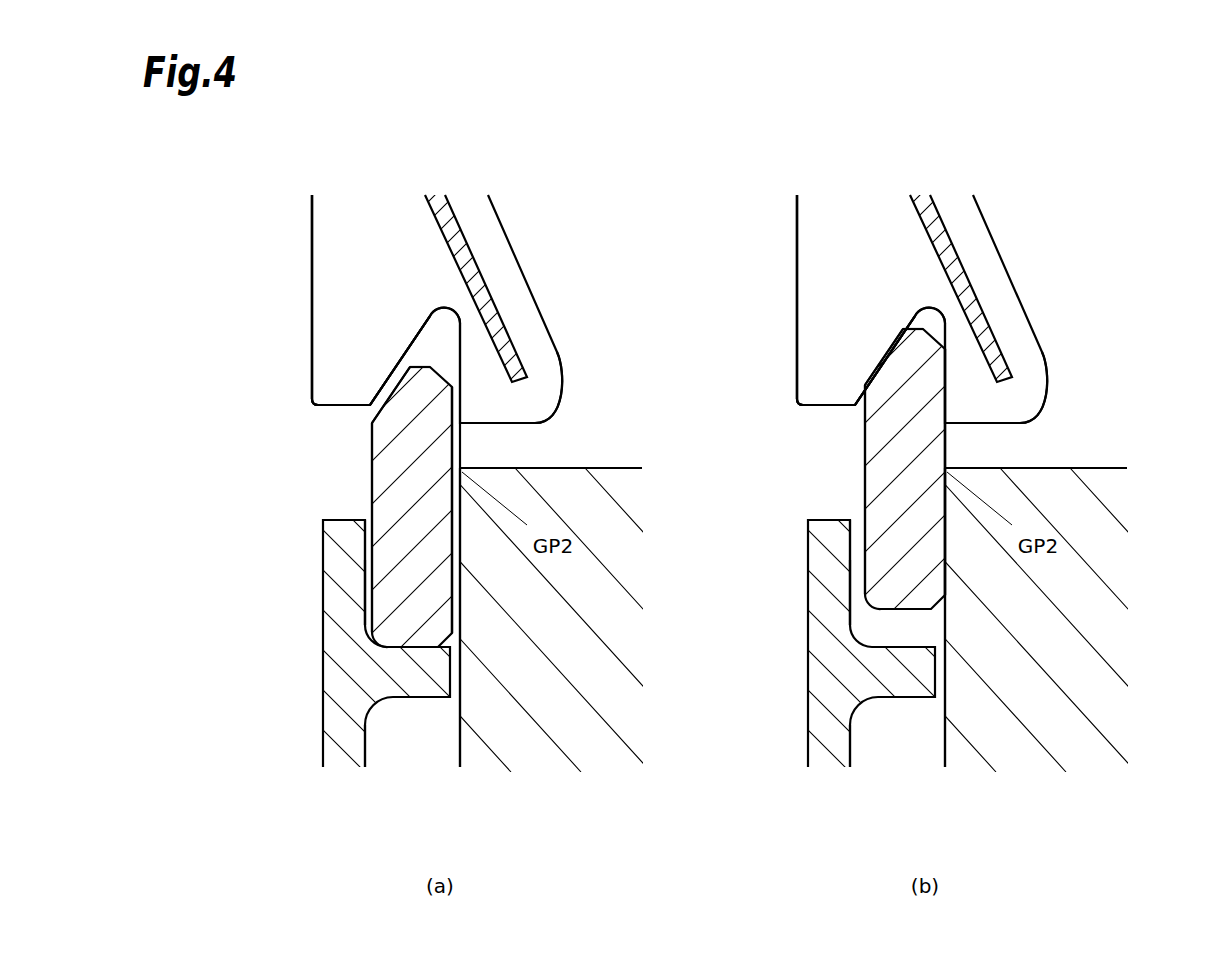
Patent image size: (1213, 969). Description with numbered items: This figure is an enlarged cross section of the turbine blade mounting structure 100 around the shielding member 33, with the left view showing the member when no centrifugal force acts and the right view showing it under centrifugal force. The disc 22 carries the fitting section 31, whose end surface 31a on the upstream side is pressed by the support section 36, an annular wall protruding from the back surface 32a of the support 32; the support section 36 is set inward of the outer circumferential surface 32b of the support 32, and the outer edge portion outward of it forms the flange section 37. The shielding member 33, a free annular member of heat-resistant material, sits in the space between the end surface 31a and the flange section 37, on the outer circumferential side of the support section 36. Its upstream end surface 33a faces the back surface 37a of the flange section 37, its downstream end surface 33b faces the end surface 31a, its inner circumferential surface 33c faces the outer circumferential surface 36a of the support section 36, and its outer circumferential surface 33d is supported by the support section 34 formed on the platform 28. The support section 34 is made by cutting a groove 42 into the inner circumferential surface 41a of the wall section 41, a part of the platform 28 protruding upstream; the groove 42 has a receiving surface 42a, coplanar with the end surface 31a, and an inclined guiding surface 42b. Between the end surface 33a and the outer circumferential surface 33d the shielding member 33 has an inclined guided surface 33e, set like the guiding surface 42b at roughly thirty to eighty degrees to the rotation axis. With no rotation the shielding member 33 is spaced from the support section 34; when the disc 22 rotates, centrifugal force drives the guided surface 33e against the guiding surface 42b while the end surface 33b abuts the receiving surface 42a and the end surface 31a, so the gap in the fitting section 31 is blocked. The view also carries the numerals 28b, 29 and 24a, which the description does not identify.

The turbine blade mounting structure 100 is at (277, 241).
The platform 28 is at (335, 287).
The bottom wall portion of housing member 28b is at (525, 430).
The inclined plate 29 is at (473, 281).
The support section 34 is at (250, 305).
The wall section 41 is at (340, 347).
The inner circumferential surface 41a is at (355, 411).
The groove 42 is at (358, 430).
The receiving surface 42a is at (454, 354).
The guiding surface 42b is at (408, 346).
The end face 24a is at (605, 465).
The disc 22 is at (456, 740).
The fitting section 31 is at (540, 795).
The end surface on the upstream side of the fitting section 31a is at (520, 665).
The shielding member 33 is at (345, 453).
The upstream end surface 33a is at (371, 484).
The downstream end surface 33b is at (455, 556).
The inner circumferential surface 33c is at (395, 655).
The outer circumferential surface 33d is at (418, 364).
The guided surface 33e is at (396, 378).
The support 32 is at (316, 677).
The back surface 32a is at (370, 755).
The outer circumferential surface 32b is at (344, 520).
The support section 36 is at (446, 560).
The outer circumferential surface 36a is at (446, 438).
The flange section 37 is at (338, 572).
The back surface 37a is at (347, 590).